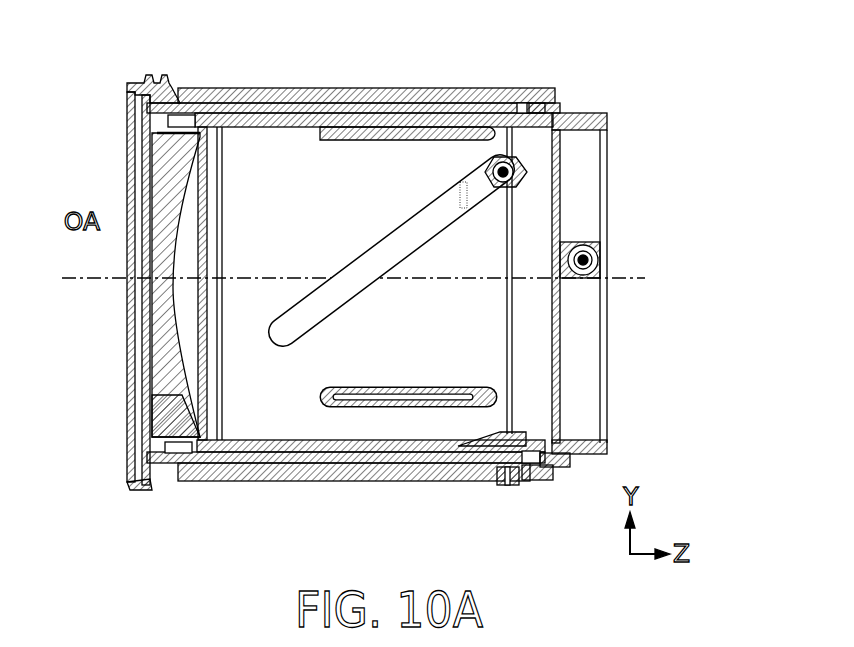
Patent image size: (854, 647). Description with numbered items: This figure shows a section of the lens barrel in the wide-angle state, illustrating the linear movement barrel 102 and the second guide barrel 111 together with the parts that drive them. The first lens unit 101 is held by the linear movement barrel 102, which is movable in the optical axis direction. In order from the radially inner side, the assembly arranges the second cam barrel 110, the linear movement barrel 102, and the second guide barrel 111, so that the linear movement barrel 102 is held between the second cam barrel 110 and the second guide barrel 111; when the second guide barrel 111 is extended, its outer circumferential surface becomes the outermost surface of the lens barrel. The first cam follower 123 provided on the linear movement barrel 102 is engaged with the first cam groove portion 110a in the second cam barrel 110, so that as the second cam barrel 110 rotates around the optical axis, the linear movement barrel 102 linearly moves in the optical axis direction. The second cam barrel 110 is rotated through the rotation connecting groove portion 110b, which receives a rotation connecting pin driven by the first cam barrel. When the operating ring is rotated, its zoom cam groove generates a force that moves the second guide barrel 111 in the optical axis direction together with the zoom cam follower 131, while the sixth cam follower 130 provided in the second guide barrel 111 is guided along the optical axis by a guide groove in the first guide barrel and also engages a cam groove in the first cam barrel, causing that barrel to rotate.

The first lens unit 101 is at (177, 425).
The linear movement barrel 102 is at (173, 80).
The second cam barrel 110 is at (355, 180).
The first cam groove portion 110a is at (277, 350).
The rotation connecting groove portion 110b is at (370, 408).
The second guide barrel 111 is at (578, 110).
The first cam follower 123 is at (500, 166).
The sixth cam follower 130 is at (590, 240).
The zoom cam follower 131 is at (500, 484).